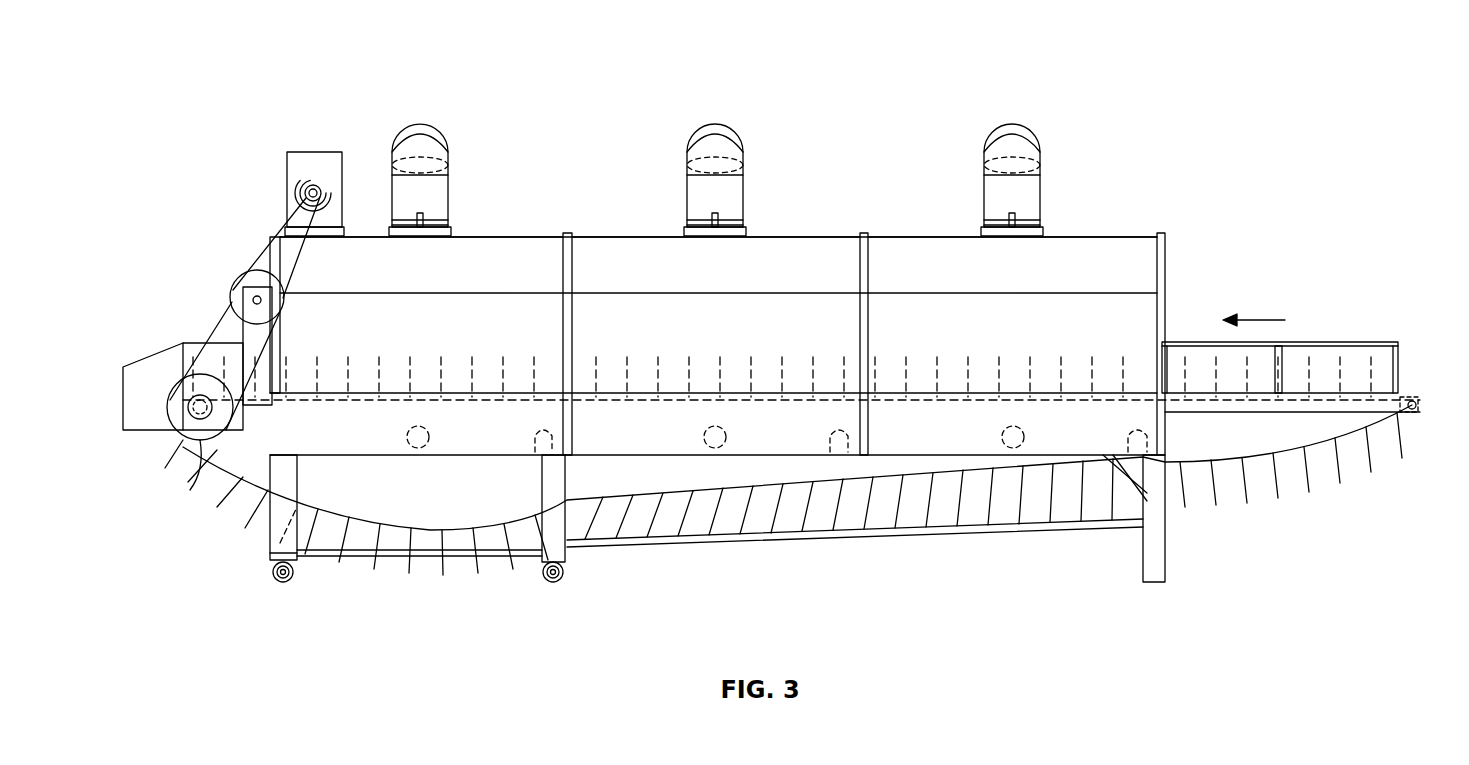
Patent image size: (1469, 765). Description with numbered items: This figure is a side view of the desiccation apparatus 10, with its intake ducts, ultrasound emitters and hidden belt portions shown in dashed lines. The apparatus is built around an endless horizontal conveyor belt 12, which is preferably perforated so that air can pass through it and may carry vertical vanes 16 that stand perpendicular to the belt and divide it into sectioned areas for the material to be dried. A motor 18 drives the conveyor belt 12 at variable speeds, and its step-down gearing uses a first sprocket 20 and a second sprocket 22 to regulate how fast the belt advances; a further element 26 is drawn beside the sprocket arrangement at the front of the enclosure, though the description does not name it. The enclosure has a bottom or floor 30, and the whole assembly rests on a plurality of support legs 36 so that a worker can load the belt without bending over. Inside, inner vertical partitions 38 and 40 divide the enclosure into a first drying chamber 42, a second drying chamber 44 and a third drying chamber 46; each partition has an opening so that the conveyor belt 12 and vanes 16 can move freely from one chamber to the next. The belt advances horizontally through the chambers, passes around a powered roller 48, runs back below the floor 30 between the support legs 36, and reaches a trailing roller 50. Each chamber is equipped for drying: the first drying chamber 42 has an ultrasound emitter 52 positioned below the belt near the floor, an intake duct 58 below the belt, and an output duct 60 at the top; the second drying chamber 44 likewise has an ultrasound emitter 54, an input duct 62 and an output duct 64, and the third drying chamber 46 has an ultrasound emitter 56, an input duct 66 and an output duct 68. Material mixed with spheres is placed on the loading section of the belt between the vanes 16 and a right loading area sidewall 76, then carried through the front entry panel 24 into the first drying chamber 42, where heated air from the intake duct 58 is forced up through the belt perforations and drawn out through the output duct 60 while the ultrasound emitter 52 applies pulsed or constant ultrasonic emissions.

The desiccation apparatus 10 is at (238, 82).
The conveyor belt 12 is at (460, 532).
The vertical vanes 16 is at (456, 356).
The motor 18 is at (303, 160).
The first sprocket 20 is at (278, 300).
The second sprocket 22 is at (175, 416).
The front entry panel 24 is at (1166, 272).
The idler pulley 26 is at (270, 268).
The bottom or floor 30 is at (653, 456).
The support legs 36 is at (565, 553).
The inner vertical partition 38 is at (866, 232).
The inner vertical partition 40 is at (568, 232).
The first drying chamber 42 is at (1050, 262).
The second drying chamber 44 is at (685, 278).
The third drying chamber 46 is at (536, 257).
The powered roller 48 is at (197, 453).
The trailing roller 50 is at (1415, 410).
The ultrasound emitter 52 is at (1133, 425).
The ultrasound emitter 54 is at (832, 452).
The ultrasound emitter 56 is at (537, 452).
The intake duct 58 is at (1025, 437).
The output duct 60 is at (1012, 122).
The input duct 62 is at (727, 434).
The output duct 64 is at (715, 122).
The input duct 66 is at (430, 434).
The output duct 68 is at (420, 122).
The right loading area sidewall 76 is at (1345, 342).